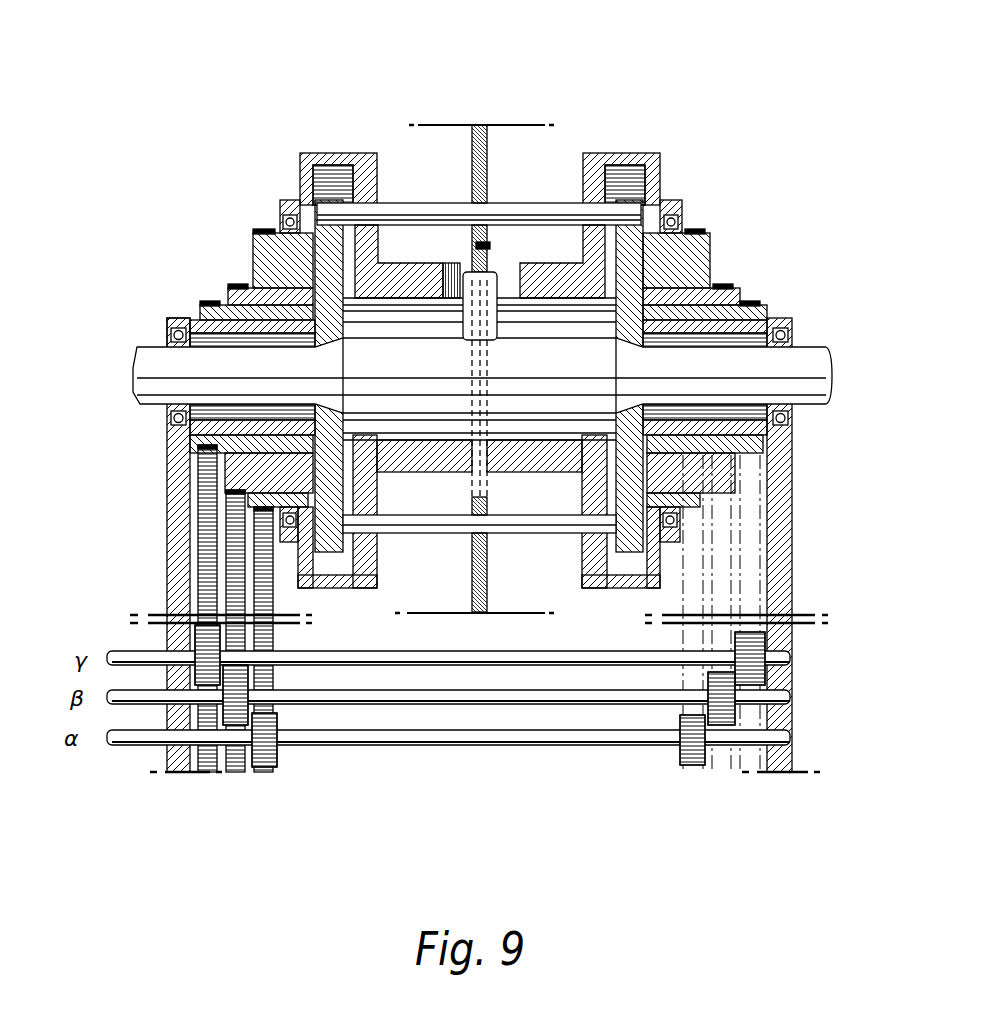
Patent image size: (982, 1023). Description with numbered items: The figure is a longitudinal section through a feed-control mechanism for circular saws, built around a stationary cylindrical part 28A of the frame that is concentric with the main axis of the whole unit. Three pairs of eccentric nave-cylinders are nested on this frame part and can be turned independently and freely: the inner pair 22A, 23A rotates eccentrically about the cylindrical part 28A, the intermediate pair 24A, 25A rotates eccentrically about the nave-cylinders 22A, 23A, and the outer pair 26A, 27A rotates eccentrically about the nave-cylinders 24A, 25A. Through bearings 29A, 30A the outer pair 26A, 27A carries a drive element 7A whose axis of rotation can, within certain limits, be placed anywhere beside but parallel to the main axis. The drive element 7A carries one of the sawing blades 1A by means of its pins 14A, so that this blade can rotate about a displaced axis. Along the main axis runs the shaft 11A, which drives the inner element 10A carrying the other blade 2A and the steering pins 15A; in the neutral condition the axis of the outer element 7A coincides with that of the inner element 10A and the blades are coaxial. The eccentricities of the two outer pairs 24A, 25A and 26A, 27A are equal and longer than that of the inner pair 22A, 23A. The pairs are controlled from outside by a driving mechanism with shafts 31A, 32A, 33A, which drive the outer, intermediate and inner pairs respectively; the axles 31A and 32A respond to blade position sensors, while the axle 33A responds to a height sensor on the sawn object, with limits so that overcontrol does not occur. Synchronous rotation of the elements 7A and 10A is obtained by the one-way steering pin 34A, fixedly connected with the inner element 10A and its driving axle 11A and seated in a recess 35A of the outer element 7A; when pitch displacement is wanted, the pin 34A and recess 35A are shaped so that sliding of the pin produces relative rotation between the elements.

The sawing blade 1A is at (487, 582).
The blade 2A is at (472, 168).
The drive element 7A is at (317, 153).
The inner element 10A is at (627, 265).
The shaft 11A is at (168, 385).
The pins 14A is at (535, 530).
The steering pins 15A is at (500, 210).
The eccentric nave-cylinder 22A is at (198, 308).
The eccentric nave-cylinder 23A is at (763, 310).
The eccentric nave-cylinder 24A is at (230, 286).
The eccentric nave-cylinder 25A is at (720, 297).
The eccentric nave-cylinder 26A is at (257, 258).
The eccentric nave-cylinder 27A is at (693, 270).
The cylindrical part of the frame 28A is at (188, 313).
The bearing 29A is at (280, 225).
The bearing 30A is at (678, 212).
The shaft 31A is at (392, 738).
The shaft 32A is at (420, 695).
The shaft 33A is at (455, 655).
The one-way steering pin 34A is at (472, 283).
The recess 35A is at (505, 270).